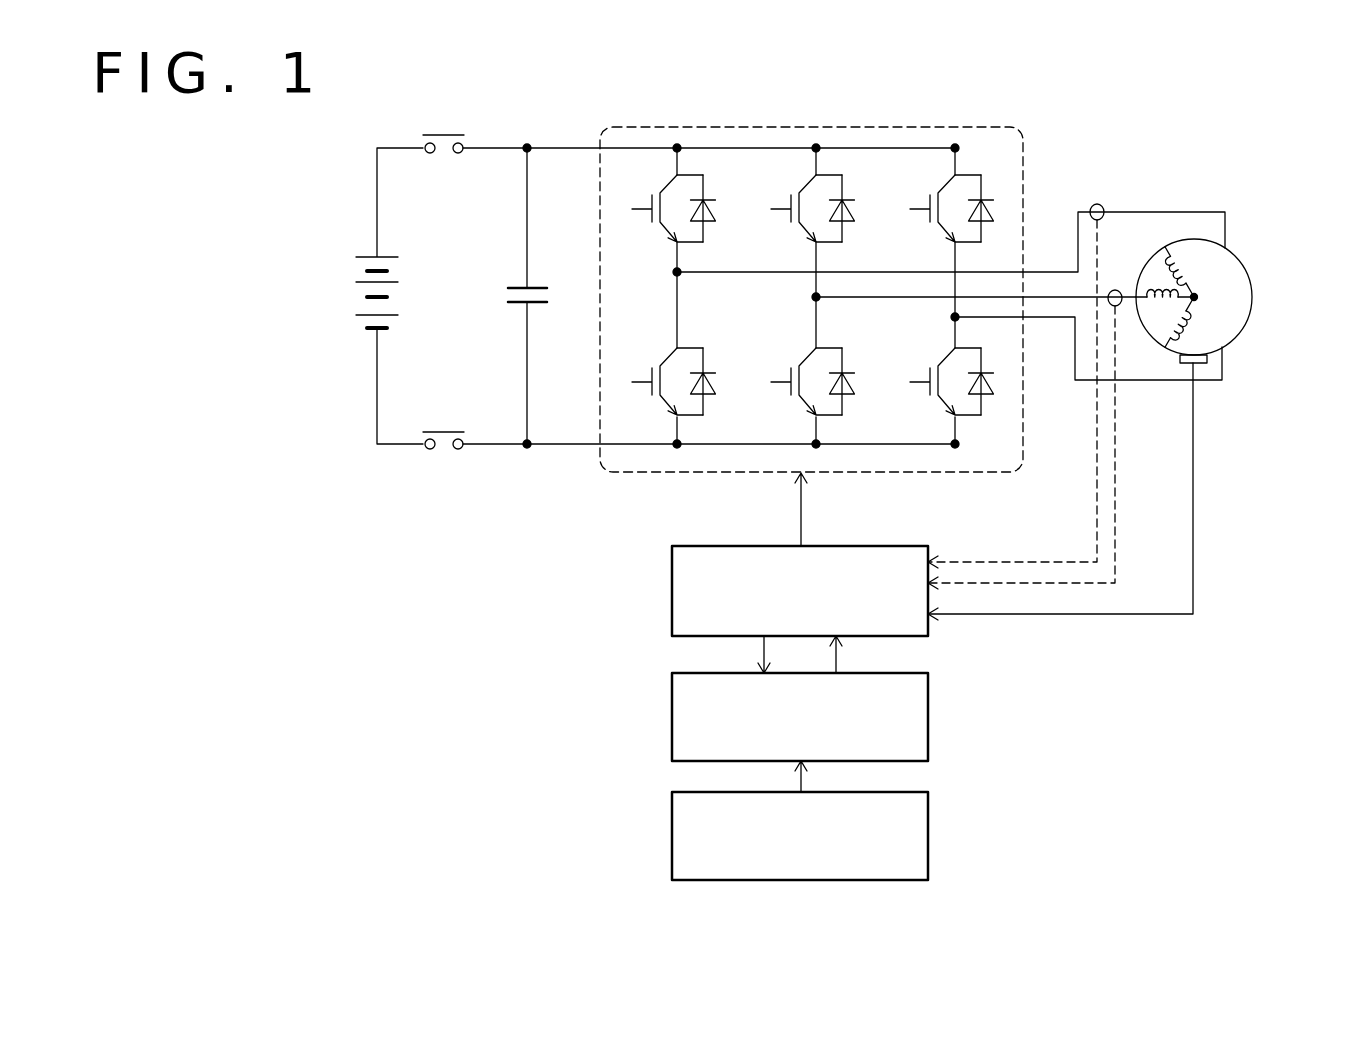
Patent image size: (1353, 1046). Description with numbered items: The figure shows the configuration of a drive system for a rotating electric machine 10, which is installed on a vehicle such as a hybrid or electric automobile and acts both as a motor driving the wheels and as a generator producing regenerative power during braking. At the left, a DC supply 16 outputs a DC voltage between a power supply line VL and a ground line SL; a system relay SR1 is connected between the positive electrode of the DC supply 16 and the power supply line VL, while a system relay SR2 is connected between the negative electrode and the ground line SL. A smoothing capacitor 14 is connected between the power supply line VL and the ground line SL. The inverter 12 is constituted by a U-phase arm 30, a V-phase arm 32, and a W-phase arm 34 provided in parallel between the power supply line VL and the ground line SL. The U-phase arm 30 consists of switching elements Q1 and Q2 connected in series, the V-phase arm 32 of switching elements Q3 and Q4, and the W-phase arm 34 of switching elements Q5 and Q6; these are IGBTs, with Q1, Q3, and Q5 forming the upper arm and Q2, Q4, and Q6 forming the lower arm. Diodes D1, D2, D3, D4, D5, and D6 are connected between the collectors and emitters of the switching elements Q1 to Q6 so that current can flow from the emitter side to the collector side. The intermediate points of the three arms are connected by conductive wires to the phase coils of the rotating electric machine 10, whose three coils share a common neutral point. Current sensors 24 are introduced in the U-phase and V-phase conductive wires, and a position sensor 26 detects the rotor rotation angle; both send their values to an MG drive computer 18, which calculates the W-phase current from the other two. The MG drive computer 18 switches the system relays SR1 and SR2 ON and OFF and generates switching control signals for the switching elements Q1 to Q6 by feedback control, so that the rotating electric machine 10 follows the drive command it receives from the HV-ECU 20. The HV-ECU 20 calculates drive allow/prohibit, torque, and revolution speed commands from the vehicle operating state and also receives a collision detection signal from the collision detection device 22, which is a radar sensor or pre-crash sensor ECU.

The rotating electric machine 10 is at (1252, 297).
The inverter 12 is at (965, 127).
The smoothing capacitor 14 is at (505, 293).
The direct current supply 16 is at (356, 297).
The MG drive computer 18 is at (672, 591).
The hybrid vehicle electronic control unit 20 is at (672, 718).
The collision detection device 22 is at (672, 838).
The current sensors 24 is at (1113, 287).
The position sensor 26 is at (1199, 365).
The U-phase arm 30 is at (664, 295).
The V-phase arm 32 is at (803, 295).
The W-phase arm 34 is at (940, 295).
The switching element Q1 is at (652, 196).
The switching element Q2 is at (652, 371).
The switching element Q3 is at (791, 196).
The switching element Q4 is at (791, 371).
The switching element Q5 is at (930, 196).
The switching element Q6 is at (930, 371).
The diode D1 is at (712, 226).
The diode D2 is at (712, 399).
The diode D3 is at (851, 226).
The diode D4 is at (851, 399).
The diode D5 is at (990, 226).
The diode D6 is at (990, 399).
The system relay SR1 is at (475, 111).
The system relay SR2 is at (475, 408).
The power supply line VL is at (573, 145).
The ground line SL is at (578, 447).